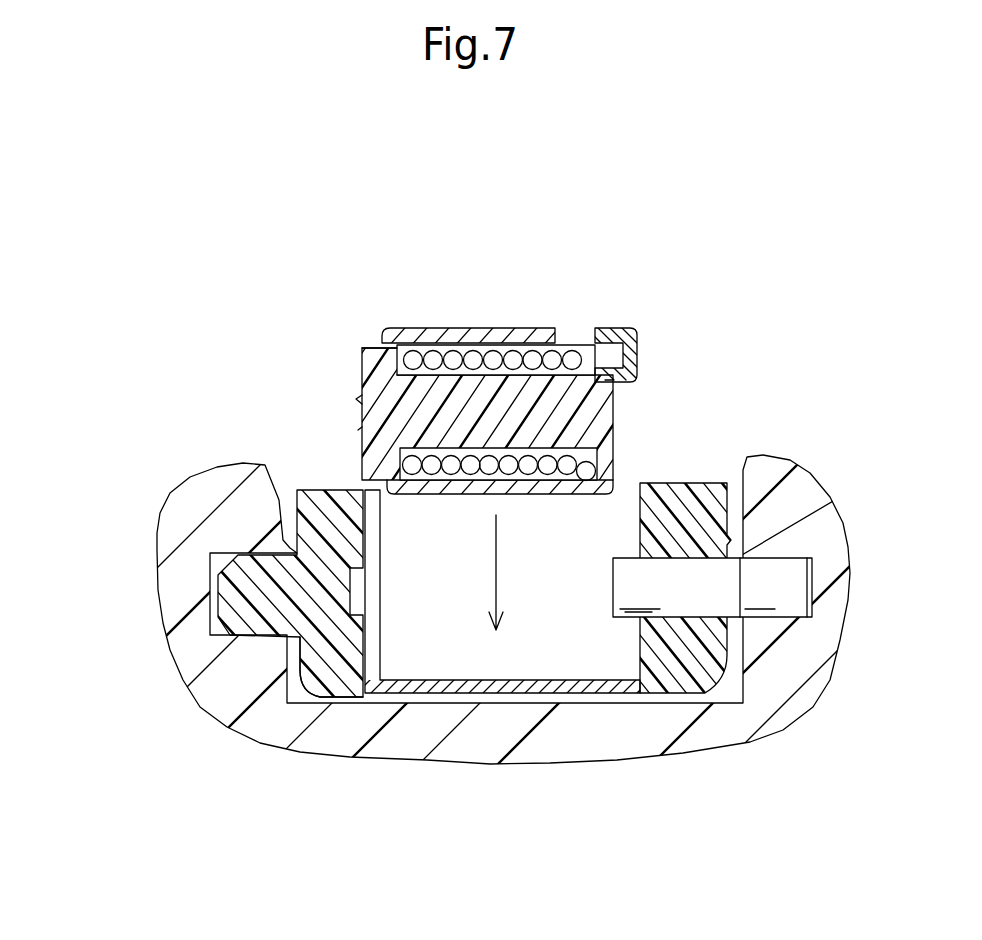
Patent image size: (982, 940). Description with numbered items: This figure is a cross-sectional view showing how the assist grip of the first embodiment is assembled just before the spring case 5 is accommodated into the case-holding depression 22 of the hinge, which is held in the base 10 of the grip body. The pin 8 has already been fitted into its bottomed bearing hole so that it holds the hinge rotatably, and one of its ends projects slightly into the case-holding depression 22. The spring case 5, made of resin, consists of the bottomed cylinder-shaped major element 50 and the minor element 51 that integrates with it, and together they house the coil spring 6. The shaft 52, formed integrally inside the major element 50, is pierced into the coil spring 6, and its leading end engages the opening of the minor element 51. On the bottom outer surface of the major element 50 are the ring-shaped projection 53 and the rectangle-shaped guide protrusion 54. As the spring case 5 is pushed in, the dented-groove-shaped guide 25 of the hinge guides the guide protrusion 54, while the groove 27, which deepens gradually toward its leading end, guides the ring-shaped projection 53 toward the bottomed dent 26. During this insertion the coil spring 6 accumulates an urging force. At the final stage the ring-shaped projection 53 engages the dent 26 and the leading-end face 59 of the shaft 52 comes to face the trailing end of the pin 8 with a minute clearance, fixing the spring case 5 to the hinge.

The spring case 5 is at (480, 324).
The coil spring 6 is at (568, 352).
The pin 8 is at (687, 590).
The base 10 is at (188, 497).
The case-holding depression 22 is at (518, 644).
The guide 25 is at (370, 597).
The dent 26 is at (347, 690).
The groove 27 is at (363, 483).
The major element 50 is at (448, 328).
The minor element 51 is at (617, 330).
The shaft 52 is at (583, 417).
The ring-shaped projection 53 is at (355, 400).
The guide protrusion 54 is at (358, 345).
The leading-end face 59 is at (612, 402).